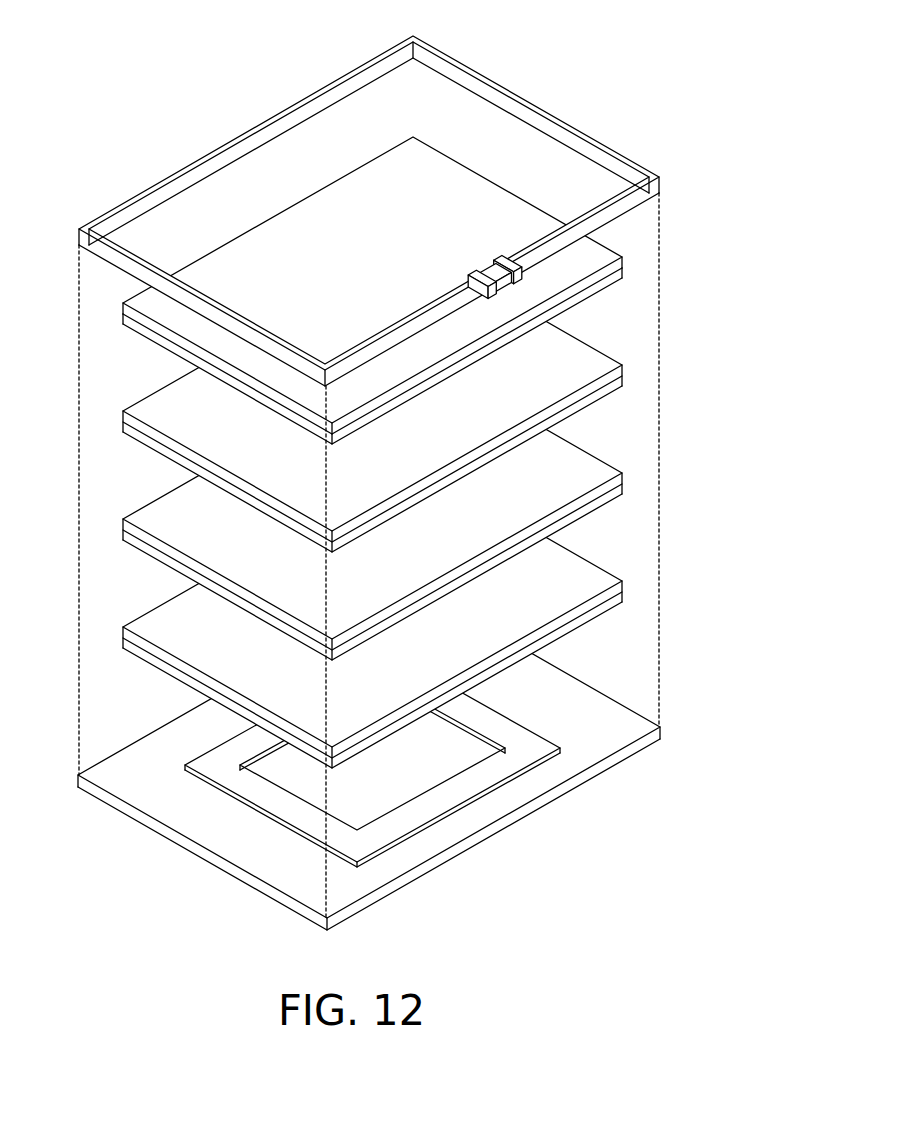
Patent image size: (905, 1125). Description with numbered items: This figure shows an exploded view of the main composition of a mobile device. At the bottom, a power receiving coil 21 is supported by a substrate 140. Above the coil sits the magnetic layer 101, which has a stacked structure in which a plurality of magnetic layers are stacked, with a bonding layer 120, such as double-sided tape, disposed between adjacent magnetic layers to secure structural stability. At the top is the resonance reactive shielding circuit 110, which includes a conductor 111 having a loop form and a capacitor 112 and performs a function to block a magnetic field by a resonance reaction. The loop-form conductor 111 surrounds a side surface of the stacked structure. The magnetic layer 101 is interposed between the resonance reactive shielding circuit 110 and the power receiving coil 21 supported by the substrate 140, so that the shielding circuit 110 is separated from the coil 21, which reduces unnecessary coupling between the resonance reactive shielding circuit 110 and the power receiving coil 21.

The resonance reactive shielding circuit 110 is at (369, 193).
The conductor 111 is at (494, 255).
The capacitor 112 is at (582, 213).
The magnetic layer 101 is at (626, 264).
The bonding layer 120 is at (614, 281).
The substrate 140 is at (572, 787).
The power receiving coil 21 is at (462, 810).